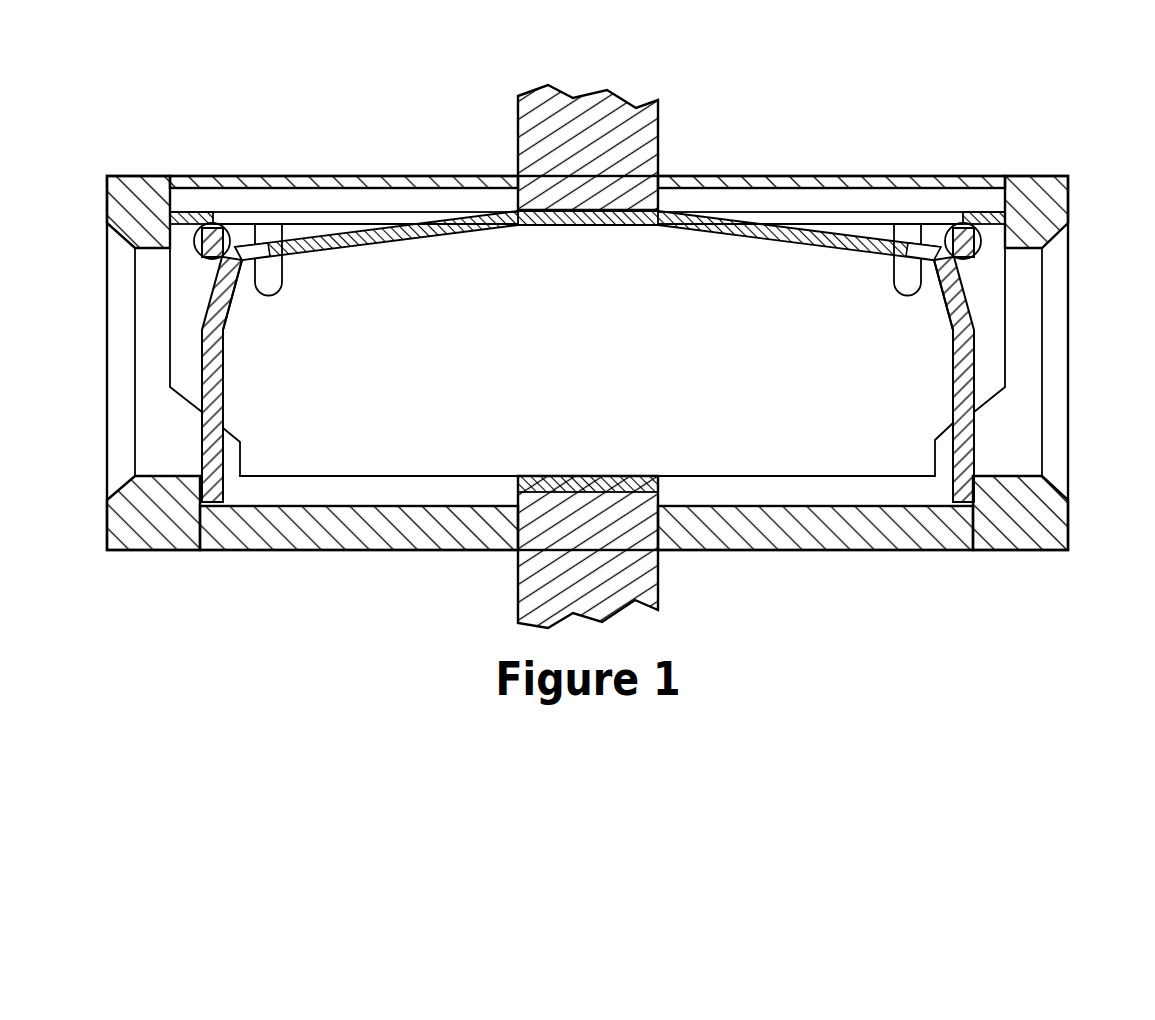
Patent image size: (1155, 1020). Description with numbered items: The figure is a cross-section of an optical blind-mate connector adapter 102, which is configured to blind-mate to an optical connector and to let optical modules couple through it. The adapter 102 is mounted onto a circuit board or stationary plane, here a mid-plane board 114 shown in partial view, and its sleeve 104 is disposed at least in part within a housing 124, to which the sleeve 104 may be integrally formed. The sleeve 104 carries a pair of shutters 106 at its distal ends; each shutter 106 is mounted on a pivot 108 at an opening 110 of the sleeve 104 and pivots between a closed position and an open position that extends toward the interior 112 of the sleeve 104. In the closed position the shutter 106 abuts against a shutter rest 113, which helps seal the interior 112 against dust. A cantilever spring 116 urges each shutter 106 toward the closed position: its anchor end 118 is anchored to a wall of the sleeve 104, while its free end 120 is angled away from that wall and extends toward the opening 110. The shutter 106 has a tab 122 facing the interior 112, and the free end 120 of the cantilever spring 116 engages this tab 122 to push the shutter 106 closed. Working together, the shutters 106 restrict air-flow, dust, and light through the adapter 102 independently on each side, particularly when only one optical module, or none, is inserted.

The optical blind-mate connector adapter 102 is at (183, 132).
The sleeve 104 is at (853, 205).
The shutter 106 is at (238, 386).
The pivot 108 is at (200, 240).
The opening 110 is at (120, 362).
The interior 112 is at (572, 372).
The shutter rest 113 is at (202, 501).
The mid-plane board 114 is at (660, 122).
The cantilever spring 116 is at (407, 238).
The anchor end 118 is at (517, 230).
The free end 120 is at (282, 272).
The tab 122 is at (232, 305).
The housing 124 is at (978, 176).